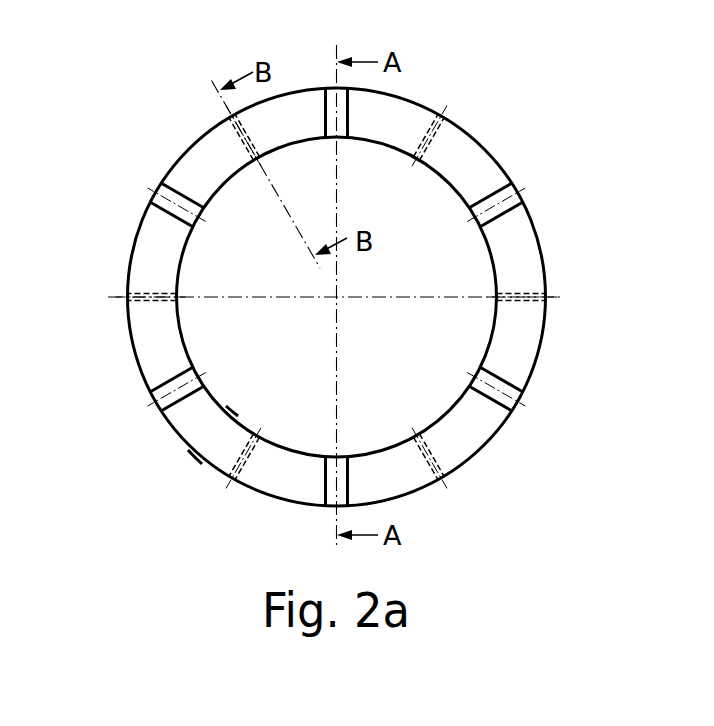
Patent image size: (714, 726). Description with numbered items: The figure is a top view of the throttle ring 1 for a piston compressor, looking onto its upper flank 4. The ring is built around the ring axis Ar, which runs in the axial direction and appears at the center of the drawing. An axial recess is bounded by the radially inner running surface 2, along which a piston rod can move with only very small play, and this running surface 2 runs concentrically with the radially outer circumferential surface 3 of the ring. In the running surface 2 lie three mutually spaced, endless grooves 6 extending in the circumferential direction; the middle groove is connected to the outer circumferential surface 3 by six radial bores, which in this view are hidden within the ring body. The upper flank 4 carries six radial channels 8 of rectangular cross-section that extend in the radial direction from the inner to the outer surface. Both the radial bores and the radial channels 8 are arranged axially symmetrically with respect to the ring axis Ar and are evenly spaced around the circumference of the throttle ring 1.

The throttle ring 1 is at (91, 77).
The radially inner running surface 2 is at (232, 412).
The radially outer circumferential surface 3 is at (195, 457).
The upper flank 4 is at (190, 172).
The grooves 6 is at (195, 378).
The radial channels 8 is at (515, 200).
The ring axis Ar is at (341, 296).